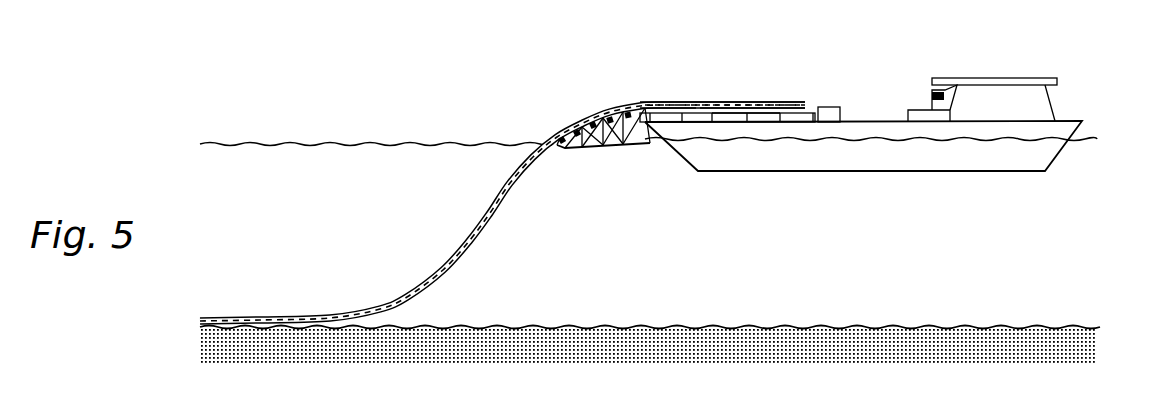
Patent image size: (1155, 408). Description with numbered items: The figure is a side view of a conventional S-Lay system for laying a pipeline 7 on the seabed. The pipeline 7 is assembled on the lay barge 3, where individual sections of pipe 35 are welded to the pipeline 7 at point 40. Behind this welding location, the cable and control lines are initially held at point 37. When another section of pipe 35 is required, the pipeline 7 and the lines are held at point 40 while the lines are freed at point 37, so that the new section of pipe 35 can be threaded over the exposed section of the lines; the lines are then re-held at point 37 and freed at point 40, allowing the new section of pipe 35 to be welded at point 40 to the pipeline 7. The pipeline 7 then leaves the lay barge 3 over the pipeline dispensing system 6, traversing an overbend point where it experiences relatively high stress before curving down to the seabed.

The lay barge 3 is at (923, 153).
The pipeline dispensing system 6 is at (597, 115).
The pipeline 7 is at (502, 228).
The section of pipe 35 is at (748, 102).
The point 37 is at (827, 102).
The point 40 is at (700, 102).